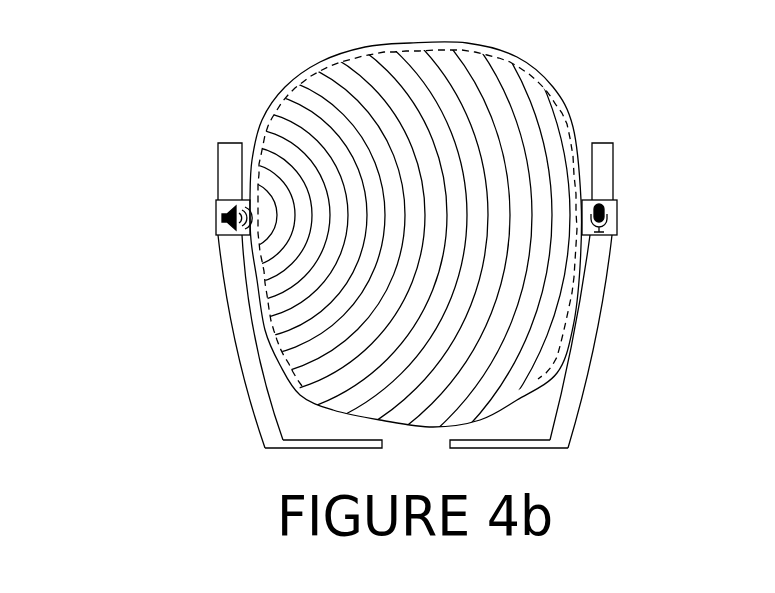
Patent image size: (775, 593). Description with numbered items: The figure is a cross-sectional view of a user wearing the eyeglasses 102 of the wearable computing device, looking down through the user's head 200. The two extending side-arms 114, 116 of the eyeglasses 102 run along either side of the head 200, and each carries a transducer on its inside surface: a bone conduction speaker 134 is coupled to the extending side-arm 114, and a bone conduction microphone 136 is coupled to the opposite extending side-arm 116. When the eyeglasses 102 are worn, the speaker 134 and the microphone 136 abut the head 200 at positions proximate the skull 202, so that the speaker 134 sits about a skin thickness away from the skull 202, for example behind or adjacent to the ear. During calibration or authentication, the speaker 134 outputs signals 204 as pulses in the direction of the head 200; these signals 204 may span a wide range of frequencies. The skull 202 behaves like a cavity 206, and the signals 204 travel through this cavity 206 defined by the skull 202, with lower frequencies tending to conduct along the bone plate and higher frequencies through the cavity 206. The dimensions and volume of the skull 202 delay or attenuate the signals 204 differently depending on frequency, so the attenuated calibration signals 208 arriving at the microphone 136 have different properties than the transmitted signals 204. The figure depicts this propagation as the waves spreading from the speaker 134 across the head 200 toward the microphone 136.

The eyeglasses 102 is at (577, 430).
The extending side-arm 114 is at (247, 360).
The extending side-arm 116 is at (592, 335).
The bone conduction speaker 134 is at (224, 203).
The bone conduction microphone 136 is at (608, 212).
The user's head 200 is at (283, 83).
The skull 202 is at (263, 117).
The signals 204 is at (250, 238).
The cavity 206 is at (488, 83).
The attenuated calibration signals 208 is at (578, 197).